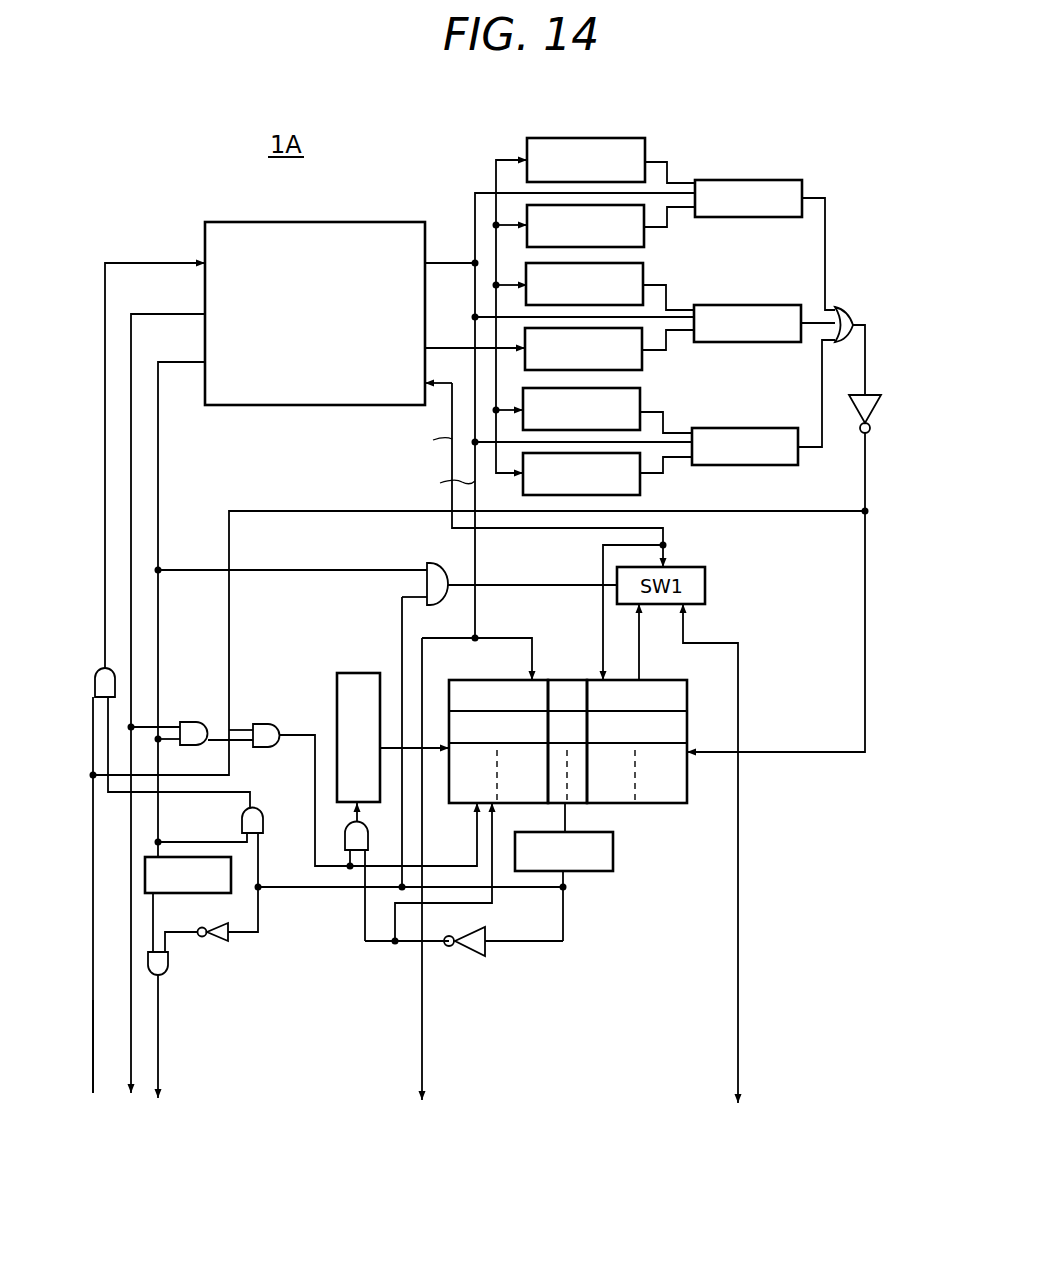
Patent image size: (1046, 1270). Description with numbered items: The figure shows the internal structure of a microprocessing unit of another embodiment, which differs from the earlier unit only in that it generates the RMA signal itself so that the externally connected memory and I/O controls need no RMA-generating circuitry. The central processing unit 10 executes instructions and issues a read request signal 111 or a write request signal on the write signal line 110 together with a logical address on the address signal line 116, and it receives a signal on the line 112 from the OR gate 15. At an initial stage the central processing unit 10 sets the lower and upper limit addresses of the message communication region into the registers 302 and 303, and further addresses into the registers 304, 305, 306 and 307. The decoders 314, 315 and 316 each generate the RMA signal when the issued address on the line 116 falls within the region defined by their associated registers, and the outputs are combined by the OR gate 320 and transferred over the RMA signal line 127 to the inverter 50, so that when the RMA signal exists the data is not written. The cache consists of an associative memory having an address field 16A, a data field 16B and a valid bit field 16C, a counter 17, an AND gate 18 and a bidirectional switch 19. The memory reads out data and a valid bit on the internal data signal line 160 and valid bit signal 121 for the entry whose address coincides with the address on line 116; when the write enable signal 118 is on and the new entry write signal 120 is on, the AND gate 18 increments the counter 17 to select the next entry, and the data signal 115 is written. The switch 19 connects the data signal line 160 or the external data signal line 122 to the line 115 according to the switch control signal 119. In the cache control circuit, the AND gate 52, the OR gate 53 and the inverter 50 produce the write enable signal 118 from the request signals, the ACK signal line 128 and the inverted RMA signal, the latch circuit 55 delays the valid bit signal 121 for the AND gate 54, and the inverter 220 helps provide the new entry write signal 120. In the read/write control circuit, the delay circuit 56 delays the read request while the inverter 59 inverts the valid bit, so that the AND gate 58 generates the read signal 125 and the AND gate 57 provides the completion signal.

The central processing unit 10 is at (353, 221).
The OR gate 15 is at (93, 681).
The address field of associative memory 16A is at (502, 678).
The data field of associative memory 16B is at (673, 679).
The valid bit field of associative memory 16C is at (582, 657).
The counter 17 is at (358, 673).
The AND gate 18 is at (368, 826).
The switch 19 is at (686, 616).
The inverter 50 is at (874, 411).
The AND gate 52 is at (268, 722).
The OR gate 53 is at (200, 722).
The AND gate 54 is at (430, 563).
The latch circuit 55 is at (596, 873).
The delay circuit 56 is at (218, 893).
The AND gate 57 is at (263, 808).
The AND gate 58 is at (170, 957).
The inverter 59 is at (212, 908).
The write signal line 110 is at (131, 422).
The read request signal 111 is at (158, 455).
The completion signal line 112 is at (105, 383).
The data signal line 115 is at (665, 546).
The address signal line 116 is at (477, 547).
The write enable signal 118 is at (448, 865).
The switch control signal 119 is at (512, 587).
The new entry write signal 120 is at (865, 476).
The valid bit signal 121 is at (567, 813).
The data signal line 122 is at (738, 860).
The read signal line 125 is at (160, 988).
The RMA signal line 127 is at (865, 372).
The ACK signal line 128 is at (93, 943).
The data signal line 160 is at (641, 657).
The inverter 220 is at (487, 952).
The register 302 is at (647, 150).
The register 303 is at (646, 238).
The register 304 is at (645, 278).
The register 305 is at (644, 360).
The register 306 is at (642, 403).
The register 307 is at (642, 488).
The decoder 314 is at (752, 180).
The decoder 315 is at (752, 305).
The decoder 316 is at (750, 428).
The OR gate 320 is at (843, 312).